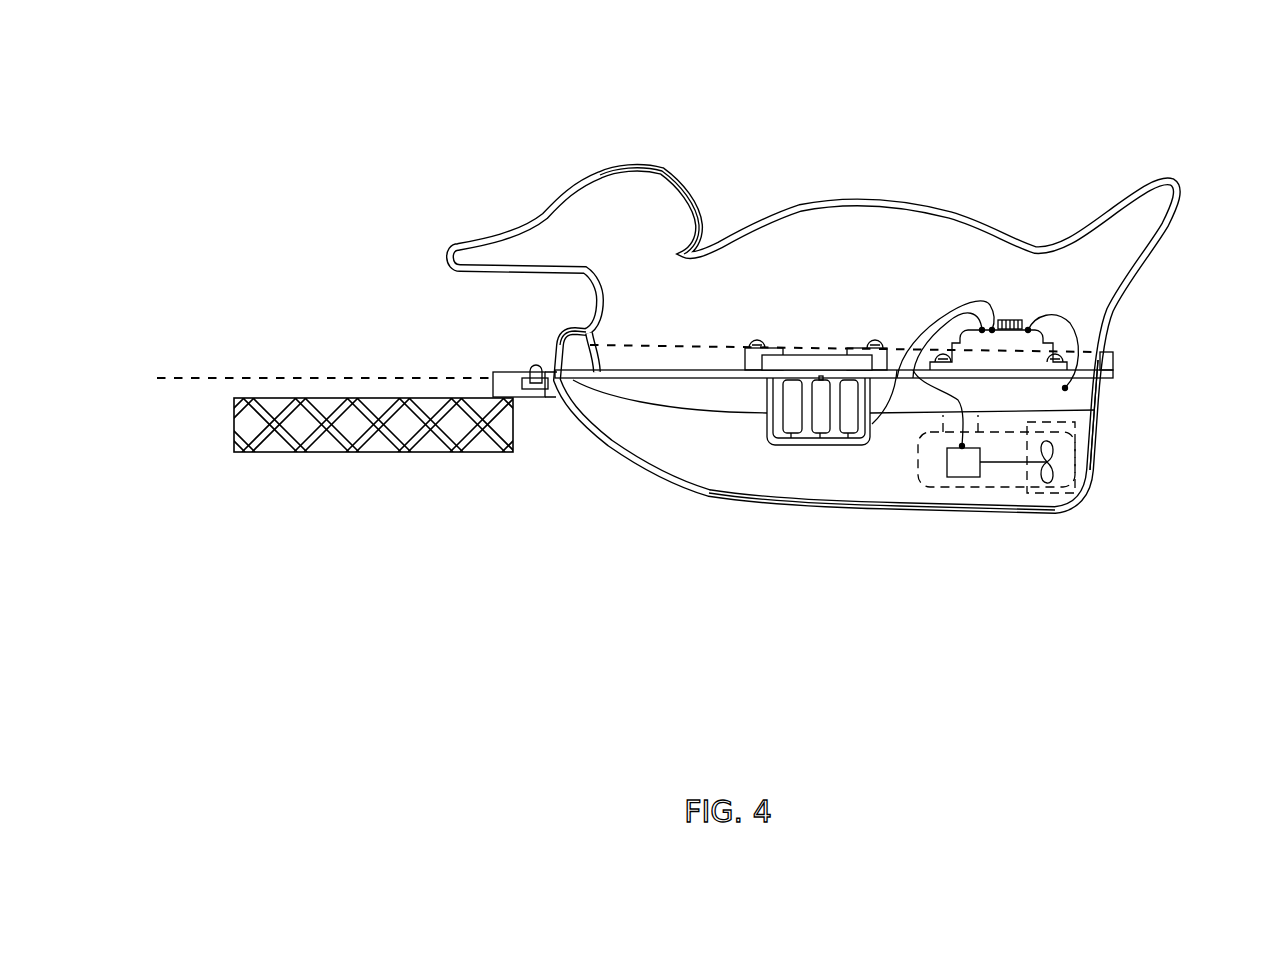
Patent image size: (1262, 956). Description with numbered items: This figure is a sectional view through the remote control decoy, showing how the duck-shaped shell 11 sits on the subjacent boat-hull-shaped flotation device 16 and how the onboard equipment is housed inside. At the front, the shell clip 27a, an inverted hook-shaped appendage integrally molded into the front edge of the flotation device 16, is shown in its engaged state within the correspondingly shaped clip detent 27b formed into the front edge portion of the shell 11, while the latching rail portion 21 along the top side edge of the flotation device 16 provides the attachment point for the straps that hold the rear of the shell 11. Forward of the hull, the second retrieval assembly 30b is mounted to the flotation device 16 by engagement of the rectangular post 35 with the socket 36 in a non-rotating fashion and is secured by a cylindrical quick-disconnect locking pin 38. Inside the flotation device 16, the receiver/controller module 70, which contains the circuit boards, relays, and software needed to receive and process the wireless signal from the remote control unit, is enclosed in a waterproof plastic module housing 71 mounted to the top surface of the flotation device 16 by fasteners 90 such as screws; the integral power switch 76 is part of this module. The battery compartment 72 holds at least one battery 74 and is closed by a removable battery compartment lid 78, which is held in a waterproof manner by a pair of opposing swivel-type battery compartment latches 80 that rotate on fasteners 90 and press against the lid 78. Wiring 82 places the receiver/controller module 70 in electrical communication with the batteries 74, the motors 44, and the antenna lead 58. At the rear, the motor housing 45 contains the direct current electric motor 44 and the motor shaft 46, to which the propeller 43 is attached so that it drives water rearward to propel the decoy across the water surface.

The shell 11 is at (864, 196).
The flotation device 16 is at (854, 507).
The latching rail portion 21 is at (1113, 360).
The shell clip 27a is at (568, 328).
The clip detent 27b is at (600, 330).
The second retrieval assembly 30b is at (383, 450).
The post 35 is at (550, 398).
The socket 36 is at (527, 398).
The locking pin 38 is at (538, 366).
The propeller 43 is at (1046, 480).
The motor 44 is at (966, 478).
The motor housing 45 is at (960, 488).
The motor shaft 46 is at (981, 475).
The antenna lead 58 is at (1068, 389).
The receiver/controller module 70 is at (1090, 447).
The module housing 71 is at (1094, 415).
The battery compartment 72 is at (769, 447).
The battery 74 is at (848, 438).
The power switch 76 is at (1007, 318).
The battery compartment lid 78 is at (824, 355).
The battery compartment latches 80 is at (853, 348).
The wiring 82 is at (952, 312).
The fasteners 90 is at (757, 343).